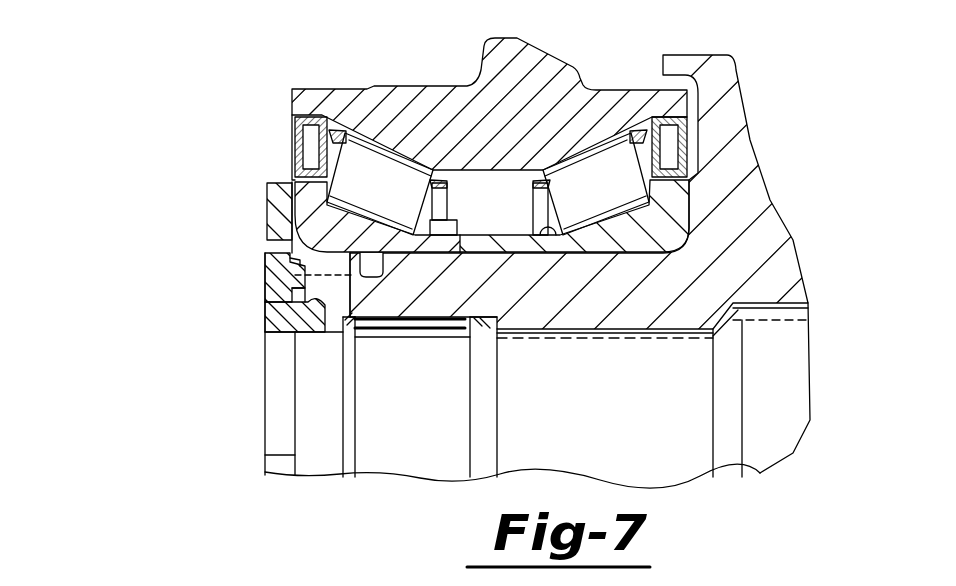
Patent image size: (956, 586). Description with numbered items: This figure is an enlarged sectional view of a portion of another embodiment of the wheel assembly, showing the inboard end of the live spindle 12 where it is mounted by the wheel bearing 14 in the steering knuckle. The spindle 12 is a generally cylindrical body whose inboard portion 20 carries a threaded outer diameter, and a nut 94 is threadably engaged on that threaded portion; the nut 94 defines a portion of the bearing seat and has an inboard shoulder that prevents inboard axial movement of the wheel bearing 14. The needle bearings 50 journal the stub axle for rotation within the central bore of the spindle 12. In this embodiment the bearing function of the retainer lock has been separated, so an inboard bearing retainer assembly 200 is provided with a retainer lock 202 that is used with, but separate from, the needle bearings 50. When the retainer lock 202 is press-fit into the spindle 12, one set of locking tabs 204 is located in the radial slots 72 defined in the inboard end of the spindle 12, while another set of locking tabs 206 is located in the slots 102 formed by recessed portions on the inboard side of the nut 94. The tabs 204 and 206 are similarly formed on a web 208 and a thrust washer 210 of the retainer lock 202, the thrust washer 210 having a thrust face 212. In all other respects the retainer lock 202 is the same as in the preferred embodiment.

The live spindle 12 is at (757, 148).
The wheel bearing 14 is at (362, 90).
The inboard portion 20 is at (562, 293).
The needle bearings 50 is at (418, 420).
The radial slots 72 is at (325, 330).
The nut 94 is at (267, 182).
The slots 102 is at (267, 220).
The inboard bearing retainer assembly 200 is at (181, 334).
The retainer lock 202 is at (285, 414).
The locking tabs 204 is at (270, 305).
The locking tabs 206 is at (267, 253).
The web 208 is at (268, 325).
The thrust washer 210 is at (267, 290).
The thrust face 212 is at (263, 455).